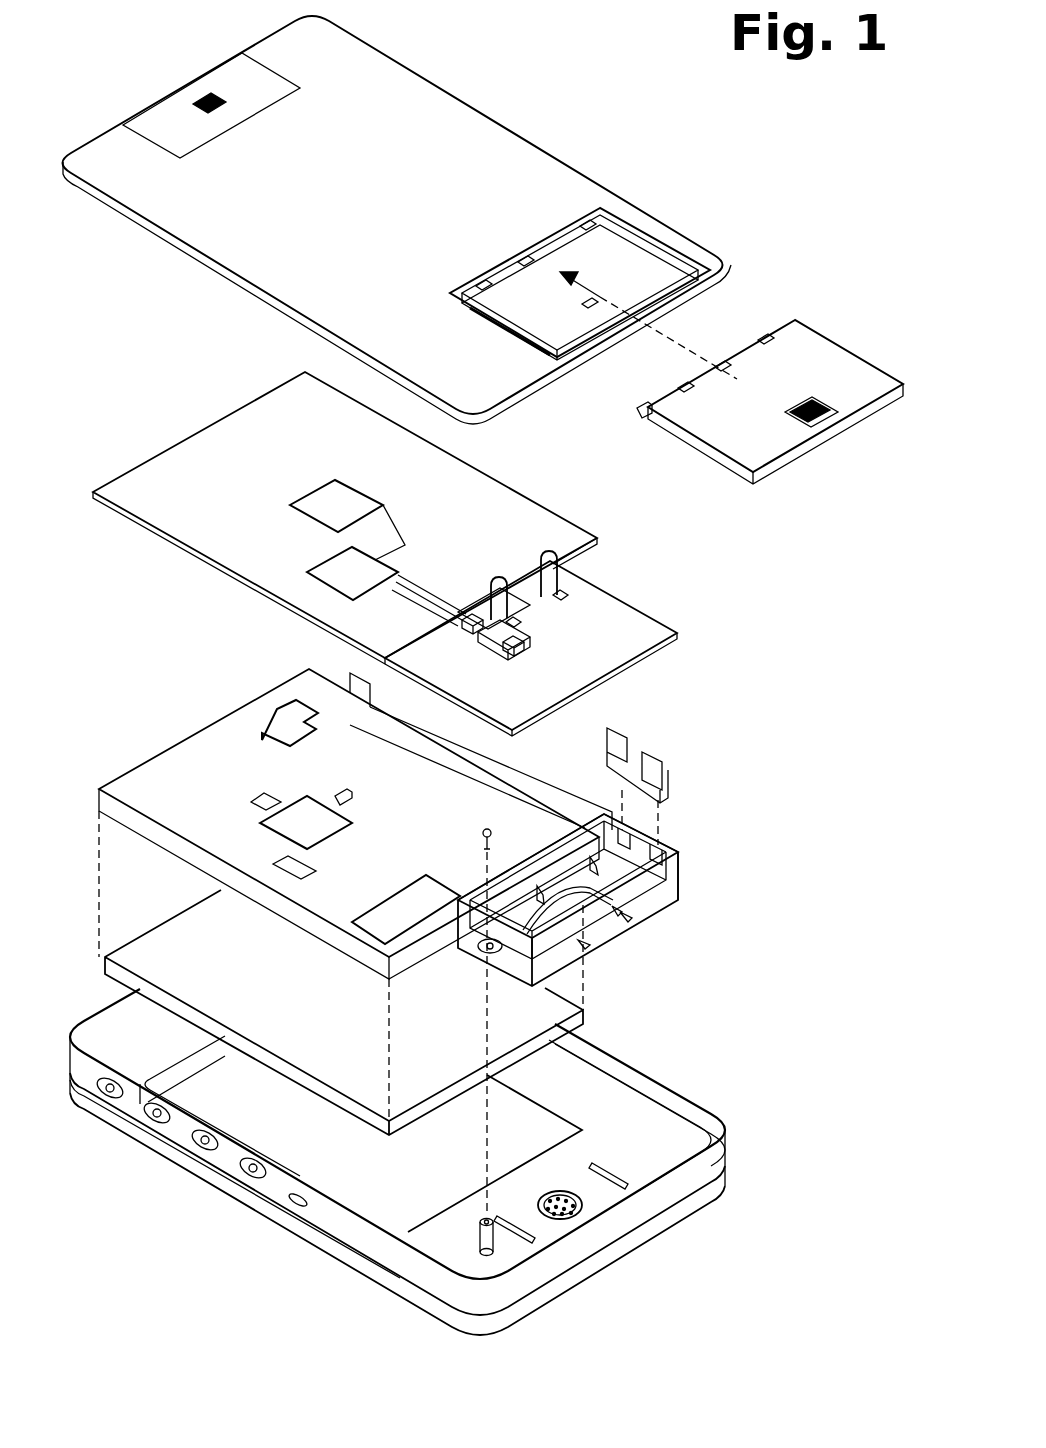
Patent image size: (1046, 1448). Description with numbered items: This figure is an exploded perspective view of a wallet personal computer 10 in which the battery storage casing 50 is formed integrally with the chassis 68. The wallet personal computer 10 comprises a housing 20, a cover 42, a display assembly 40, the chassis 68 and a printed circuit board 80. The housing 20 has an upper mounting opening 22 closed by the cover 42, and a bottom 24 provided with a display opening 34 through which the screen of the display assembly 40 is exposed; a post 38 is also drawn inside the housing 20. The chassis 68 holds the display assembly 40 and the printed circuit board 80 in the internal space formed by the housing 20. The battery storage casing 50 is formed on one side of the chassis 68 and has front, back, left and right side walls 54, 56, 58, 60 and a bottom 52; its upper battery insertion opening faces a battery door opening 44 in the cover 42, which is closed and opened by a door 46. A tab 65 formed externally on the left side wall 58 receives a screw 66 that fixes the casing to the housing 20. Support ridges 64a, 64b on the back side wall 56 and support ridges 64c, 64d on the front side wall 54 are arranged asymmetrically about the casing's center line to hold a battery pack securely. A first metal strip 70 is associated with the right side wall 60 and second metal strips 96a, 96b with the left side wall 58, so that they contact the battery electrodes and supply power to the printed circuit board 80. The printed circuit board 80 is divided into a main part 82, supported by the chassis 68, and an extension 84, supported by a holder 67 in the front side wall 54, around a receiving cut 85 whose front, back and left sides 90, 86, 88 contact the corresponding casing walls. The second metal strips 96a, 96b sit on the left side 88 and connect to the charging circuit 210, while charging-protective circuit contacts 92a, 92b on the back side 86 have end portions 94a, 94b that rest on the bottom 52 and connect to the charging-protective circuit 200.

The wallet personal computer 10 is at (552, 36).
The housing 20 is at (700, 1190).
The upper mounting opening 22 is at (700, 1110).
The bottom 24 is at (620, 1120).
The display opening 34 is at (580, 1085).
The mounting post 38 is at (480, 1235).
The display assembly 40 is at (180, 935).
The cover 42 is at (540, 155).
The battery door opening 44 is at (635, 255).
The door 46 is at (815, 350).
The battery storage casing 50 is at (695, 904).
The bottom 52 is at (614, 870).
The front side wall 54 is at (650, 870).
The back side wall 56 is at (598, 812).
The left side wall 58 is at (530, 945).
The right side wall 60 is at (633, 830).
The support ridge 64a is at (590, 860).
The support ridge 64b is at (540, 886).
The support ridge 64c is at (632, 920).
The support ridge 64d is at (582, 950).
The tab 65 is at (485, 950).
The screw 66 is at (483, 835).
The holder 67 is at (617, 912).
The chassis 68 is at (200, 735).
The first metal strip 70 is at (637, 745).
The printed circuit board 80 is at (538, 487).
The main part 82 is at (445, 470).
The extension 84 is at (635, 640).
The receiving cut 85 is at (490, 608).
The back side 86 is at (612, 548).
The left side 88 is at (530, 652).
The front side 90 is at (623, 603).
The charging-protective circuit contact 92a is at (495, 585).
The charging-protective circuit contact 92b is at (545, 560).
The end portion 94a is at (520, 624).
The end portion 94b is at (565, 596).
The second metal strip 96a is at (465, 632).
The second metal strip 96b is at (503, 656).
The charging-protective circuit 200 is at (340, 570).
The charging circuit 210 is at (322, 500).